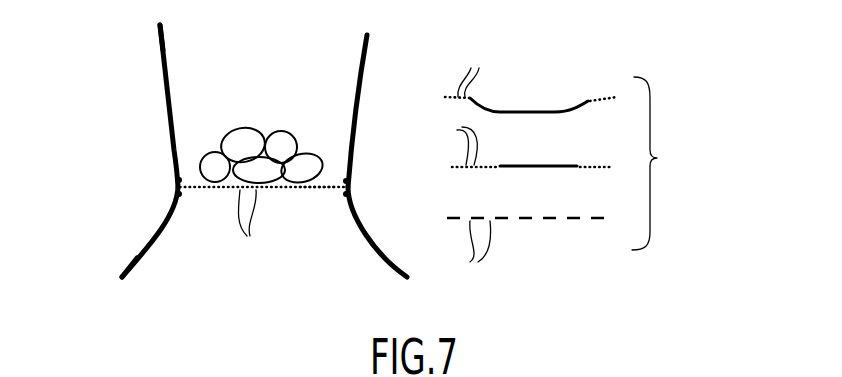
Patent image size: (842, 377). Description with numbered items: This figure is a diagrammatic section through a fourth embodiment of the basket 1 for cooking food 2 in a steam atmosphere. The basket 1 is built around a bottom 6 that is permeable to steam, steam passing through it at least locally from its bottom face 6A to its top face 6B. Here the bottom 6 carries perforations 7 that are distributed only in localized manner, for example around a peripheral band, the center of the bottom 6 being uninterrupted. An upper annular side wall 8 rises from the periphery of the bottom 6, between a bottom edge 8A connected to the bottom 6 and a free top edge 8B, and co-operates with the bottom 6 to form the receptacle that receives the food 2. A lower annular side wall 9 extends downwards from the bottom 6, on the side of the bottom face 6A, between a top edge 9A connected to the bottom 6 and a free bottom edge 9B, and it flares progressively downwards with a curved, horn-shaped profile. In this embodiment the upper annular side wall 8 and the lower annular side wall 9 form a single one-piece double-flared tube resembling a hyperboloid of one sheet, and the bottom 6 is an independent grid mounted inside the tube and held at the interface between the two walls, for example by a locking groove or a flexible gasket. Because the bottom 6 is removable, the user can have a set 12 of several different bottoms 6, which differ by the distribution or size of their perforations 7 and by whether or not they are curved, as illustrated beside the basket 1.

The basket 1 is at (136, 99).
The food 2 is at (261, 119).
The bottom 6 is at (212, 194).
The bottom face 6A is at (308, 190).
The top face 6B is at (327, 185).
The perforations 7 is at (365, 164).
The upper annular side wall 8 is at (363, 80).
The bottom edge 8A is at (175, 172).
The free top edge 8B is at (161, 30).
The lower annular side wall 9 is at (153, 233).
The top edge 9A is at (353, 190).
The free bottom edge 9B is at (122, 278).
The set 12 is at (659, 163).